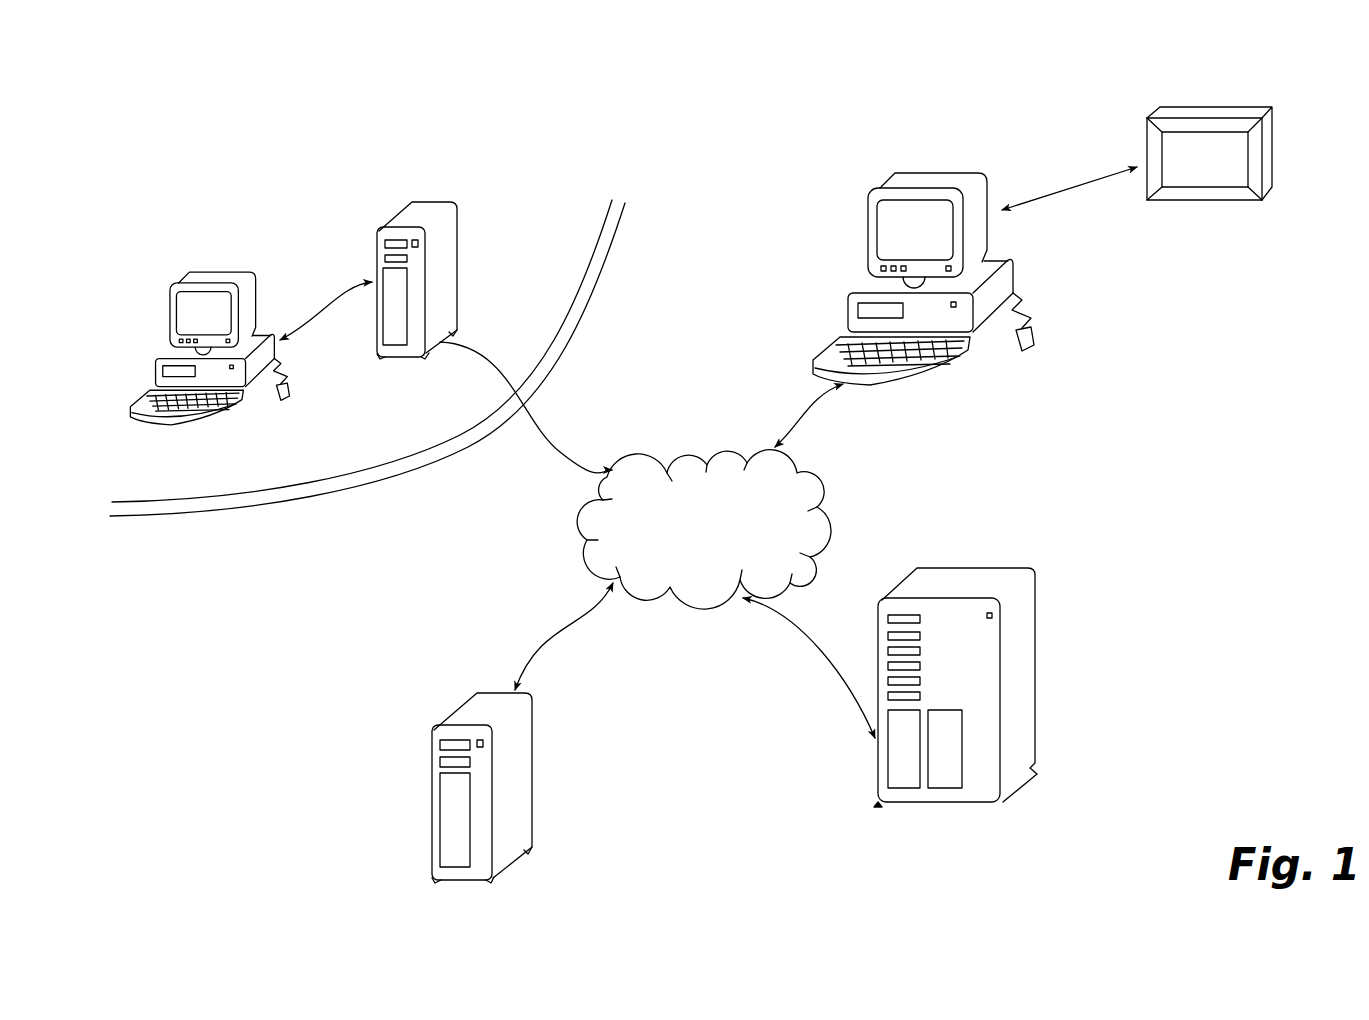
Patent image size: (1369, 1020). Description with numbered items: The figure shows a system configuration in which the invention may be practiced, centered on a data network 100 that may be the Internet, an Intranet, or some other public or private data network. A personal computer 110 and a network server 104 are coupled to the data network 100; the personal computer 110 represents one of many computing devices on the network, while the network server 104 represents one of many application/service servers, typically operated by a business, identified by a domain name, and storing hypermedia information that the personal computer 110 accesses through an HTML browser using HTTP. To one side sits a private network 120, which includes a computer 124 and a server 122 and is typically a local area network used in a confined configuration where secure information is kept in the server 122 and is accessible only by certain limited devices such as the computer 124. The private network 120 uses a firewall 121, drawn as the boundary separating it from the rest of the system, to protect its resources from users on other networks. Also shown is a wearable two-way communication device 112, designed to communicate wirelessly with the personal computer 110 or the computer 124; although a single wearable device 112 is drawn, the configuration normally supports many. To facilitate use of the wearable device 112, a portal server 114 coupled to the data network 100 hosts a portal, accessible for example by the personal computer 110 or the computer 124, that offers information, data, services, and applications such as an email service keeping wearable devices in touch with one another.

The data network 100 is at (808, 493).
The network server 104 is at (522, 792).
The personal computer 110 is at (1005, 279).
The wearable two-way communication device 112 is at (1240, 112).
The portal server 114 is at (960, 578).
The private network 120 is at (414, 328).
The firewall 121 is at (620, 196).
The server 122 is at (410, 218).
The computer 124 is at (202, 288).